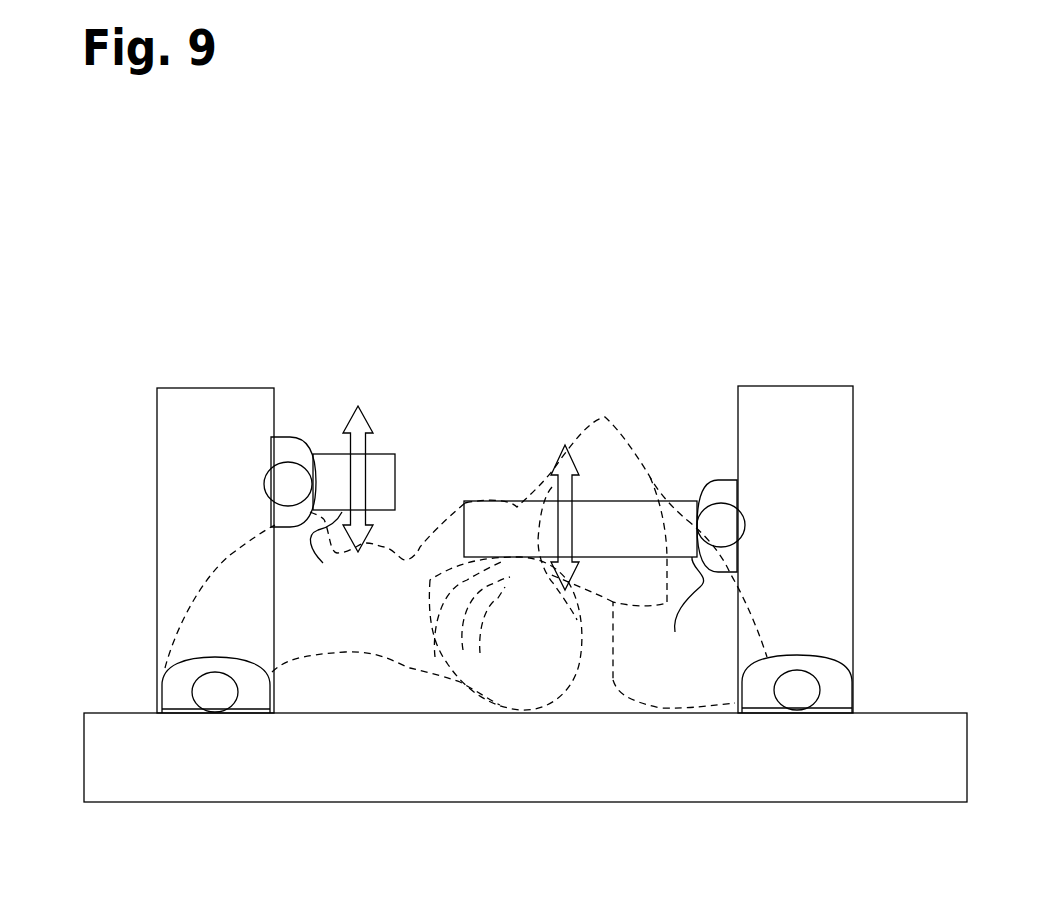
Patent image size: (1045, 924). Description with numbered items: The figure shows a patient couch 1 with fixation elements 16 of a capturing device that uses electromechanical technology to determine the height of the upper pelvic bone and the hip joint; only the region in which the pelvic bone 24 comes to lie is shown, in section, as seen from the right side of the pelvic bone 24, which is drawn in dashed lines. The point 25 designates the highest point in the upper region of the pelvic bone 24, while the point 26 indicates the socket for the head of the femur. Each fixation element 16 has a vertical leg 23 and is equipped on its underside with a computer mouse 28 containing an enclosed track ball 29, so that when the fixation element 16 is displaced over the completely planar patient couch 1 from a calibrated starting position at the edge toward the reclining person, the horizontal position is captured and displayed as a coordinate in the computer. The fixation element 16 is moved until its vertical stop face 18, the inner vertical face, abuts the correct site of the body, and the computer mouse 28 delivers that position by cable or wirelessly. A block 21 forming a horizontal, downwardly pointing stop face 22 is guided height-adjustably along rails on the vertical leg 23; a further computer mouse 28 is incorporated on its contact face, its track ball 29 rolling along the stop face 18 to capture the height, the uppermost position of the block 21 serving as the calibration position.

The patient couch 1 is at (502, 780).
The fixation element 16 is at (507, 477).
The vertical stop face 18 is at (280, 652).
The block 21 is at (387, 462).
The stop face 22 is at (503, 592).
The vertical leg 23 is at (207, 405).
The pelvic bone 24 is at (404, 632).
The point 25 is at (323, 508).
The point 26 is at (505, 555).
The computer mouse 28 is at (288, 435).
The track ball 29 is at (288, 482).